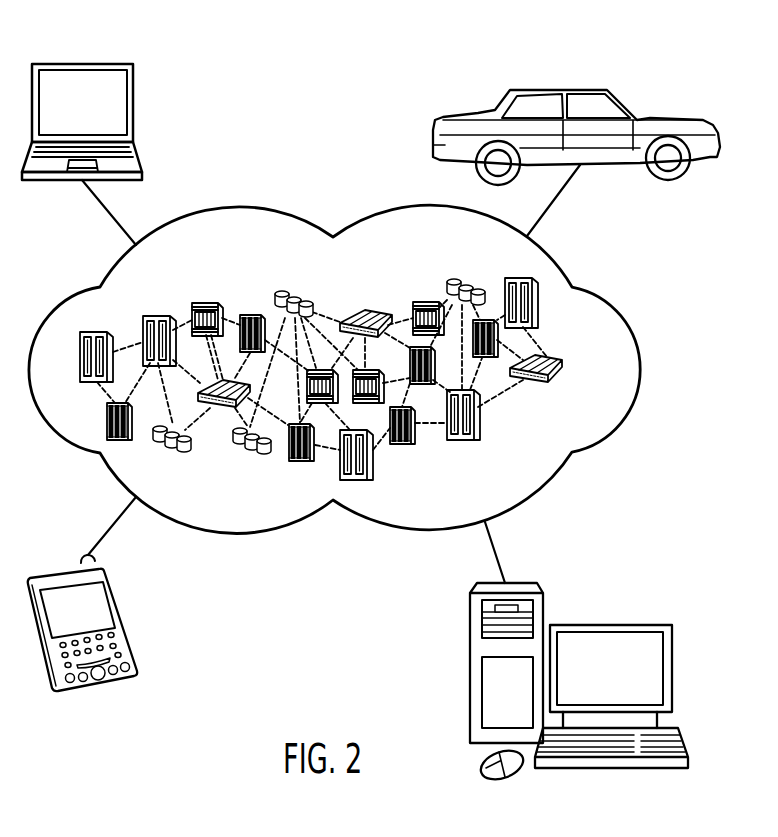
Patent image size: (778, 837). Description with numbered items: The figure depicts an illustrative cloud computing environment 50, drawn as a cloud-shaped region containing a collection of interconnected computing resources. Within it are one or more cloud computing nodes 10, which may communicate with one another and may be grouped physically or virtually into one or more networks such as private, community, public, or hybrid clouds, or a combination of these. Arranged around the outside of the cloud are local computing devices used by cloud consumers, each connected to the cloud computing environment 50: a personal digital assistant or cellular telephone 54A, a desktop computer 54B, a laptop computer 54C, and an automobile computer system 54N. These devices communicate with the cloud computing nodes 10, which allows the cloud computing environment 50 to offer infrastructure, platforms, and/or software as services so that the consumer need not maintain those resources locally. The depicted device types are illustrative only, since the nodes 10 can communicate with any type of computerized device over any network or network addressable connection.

The cloud computing node 10 is at (580, 369).
The cloud computing environment 50 is at (623, 290).
The personal digital assistant (PDA) or cellular telephone 54A is at (62, 568).
The desktop computer 54B is at (610, 623).
The laptop computer 54C is at (82, 63).
The automobile computer system 54N is at (556, 88).